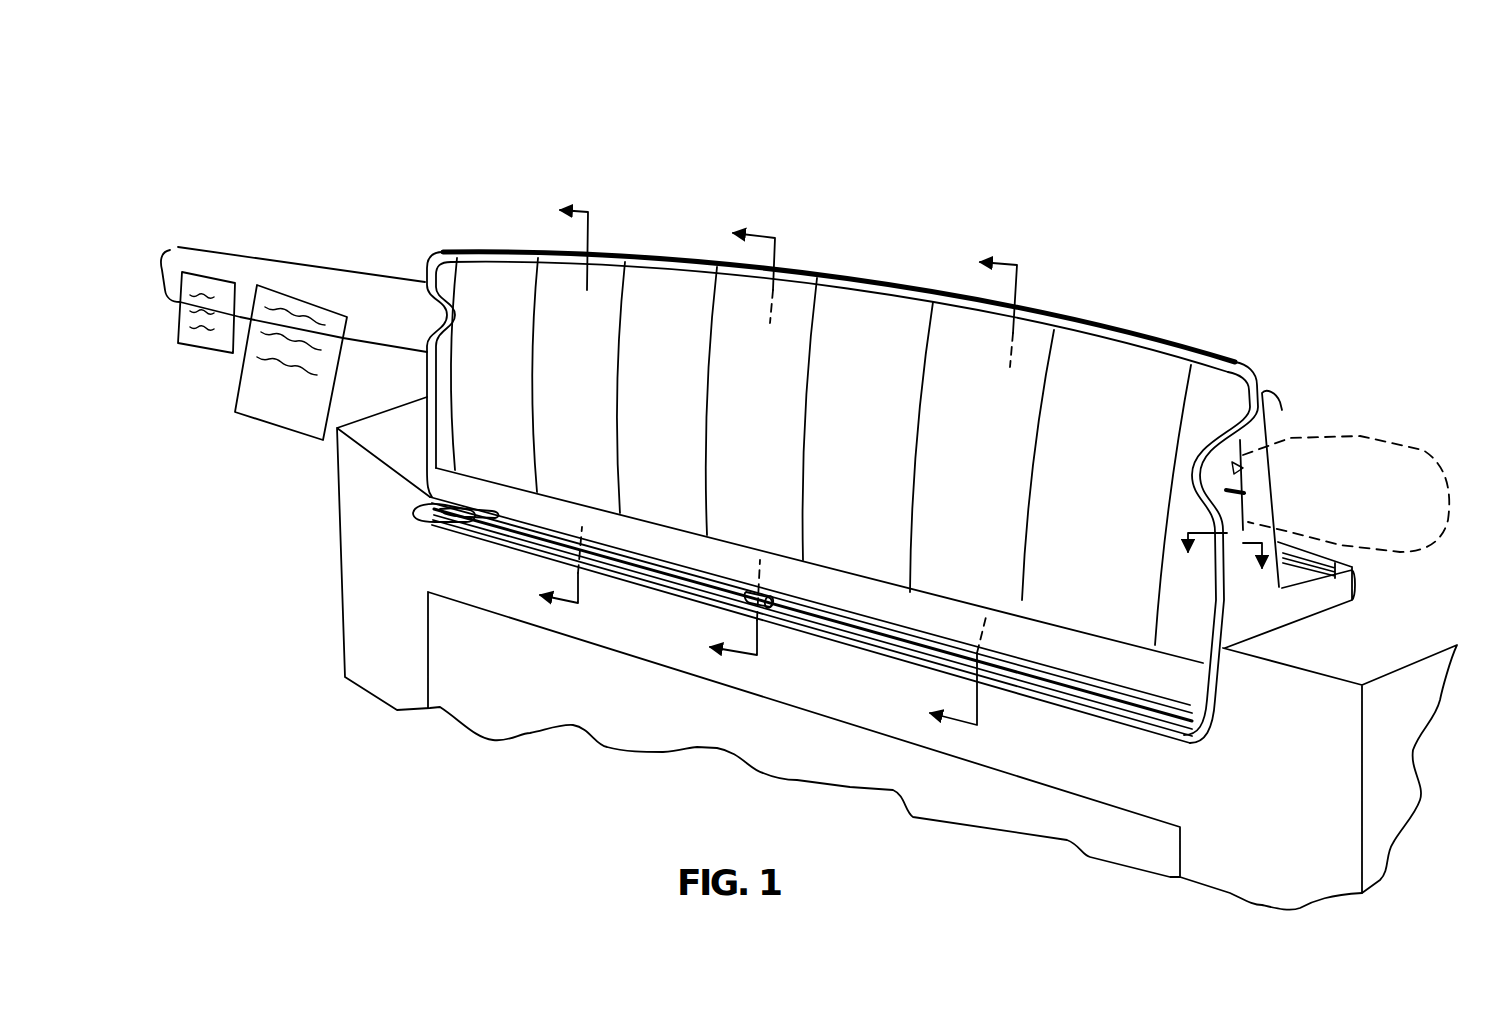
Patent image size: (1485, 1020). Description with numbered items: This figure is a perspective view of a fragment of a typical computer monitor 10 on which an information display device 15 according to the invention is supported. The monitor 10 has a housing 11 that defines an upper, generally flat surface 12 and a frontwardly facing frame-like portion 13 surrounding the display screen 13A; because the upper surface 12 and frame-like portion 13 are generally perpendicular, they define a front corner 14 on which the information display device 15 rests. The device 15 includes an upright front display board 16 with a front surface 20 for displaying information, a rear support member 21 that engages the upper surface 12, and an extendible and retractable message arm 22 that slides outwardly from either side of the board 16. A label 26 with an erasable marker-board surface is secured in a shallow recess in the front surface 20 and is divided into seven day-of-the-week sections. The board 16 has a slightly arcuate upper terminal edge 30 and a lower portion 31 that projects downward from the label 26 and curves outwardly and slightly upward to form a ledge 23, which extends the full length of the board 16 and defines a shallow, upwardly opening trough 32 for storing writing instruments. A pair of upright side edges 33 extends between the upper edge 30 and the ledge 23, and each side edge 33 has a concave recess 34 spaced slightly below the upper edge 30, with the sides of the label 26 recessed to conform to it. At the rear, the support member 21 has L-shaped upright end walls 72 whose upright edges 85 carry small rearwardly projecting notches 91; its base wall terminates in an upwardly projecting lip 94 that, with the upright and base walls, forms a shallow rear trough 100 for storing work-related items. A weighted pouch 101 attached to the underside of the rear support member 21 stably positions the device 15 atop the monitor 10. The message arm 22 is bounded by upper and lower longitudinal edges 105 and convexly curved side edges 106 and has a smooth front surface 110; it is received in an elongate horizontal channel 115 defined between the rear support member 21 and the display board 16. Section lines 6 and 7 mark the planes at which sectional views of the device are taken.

The computer monitor 10 is at (330, 665).
The housing 11 is at (340, 560).
The upper surface 12 is at (1390, 670).
The frame-like portion 13 is at (390, 670).
The display screen 13A is at (545, 691).
The front corner 14 is at (1303, 672).
The information display device 15 is at (1227, 327).
The front display board 16 is at (438, 248).
The front surface 20 is at (437, 430).
The rear support member 21 is at (1278, 406).
The message arm 22 is at (316, 266).
The ledge 23 is at (1195, 744).
The label 26 is at (873, 345).
The upper terminal edge 30 is at (1100, 327).
The lower portion 31 is at (422, 497).
The trough 32 is at (1067, 693).
The upright side edges 33 is at (423, 273).
The concave recess 34 is at (430, 333).
The end walls 72 is at (1245, 492).
The upright edges 85 is at (1270, 433).
The notches 91 is at (1243, 452).
The lip or flange 94 is at (1357, 560).
The trough 100 is at (1362, 530).
The weighted pouch 101 is at (1317, 614).
The longitudinal edges 105 is at (217, 250).
The side edges 106 is at (175, 300).
The front surface 110 is at (280, 275).
The channel 115 is at (1290, 457).
The section line 6 is at (731, 438).
The section line 7 is at (762, 463).